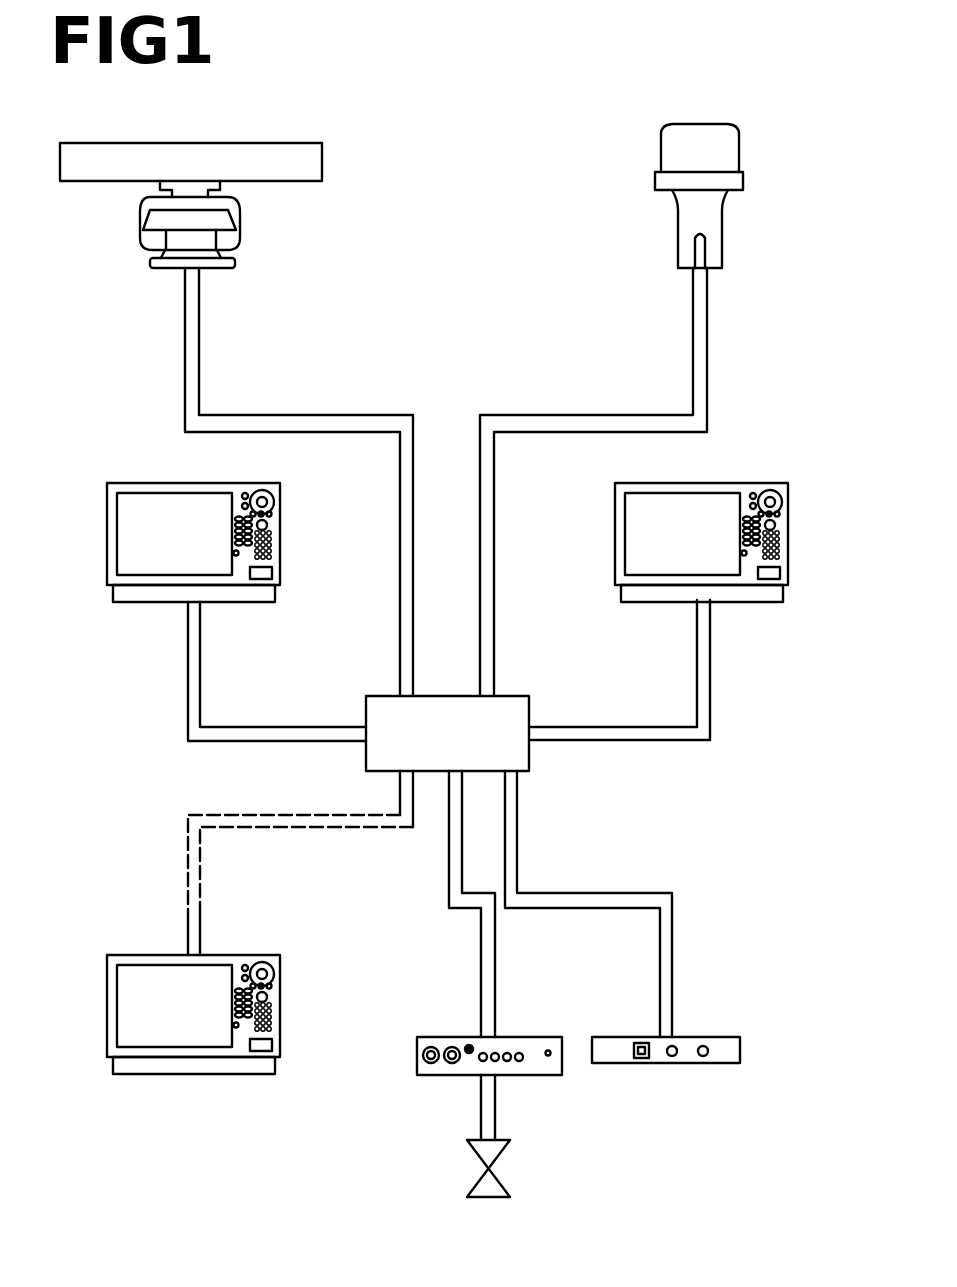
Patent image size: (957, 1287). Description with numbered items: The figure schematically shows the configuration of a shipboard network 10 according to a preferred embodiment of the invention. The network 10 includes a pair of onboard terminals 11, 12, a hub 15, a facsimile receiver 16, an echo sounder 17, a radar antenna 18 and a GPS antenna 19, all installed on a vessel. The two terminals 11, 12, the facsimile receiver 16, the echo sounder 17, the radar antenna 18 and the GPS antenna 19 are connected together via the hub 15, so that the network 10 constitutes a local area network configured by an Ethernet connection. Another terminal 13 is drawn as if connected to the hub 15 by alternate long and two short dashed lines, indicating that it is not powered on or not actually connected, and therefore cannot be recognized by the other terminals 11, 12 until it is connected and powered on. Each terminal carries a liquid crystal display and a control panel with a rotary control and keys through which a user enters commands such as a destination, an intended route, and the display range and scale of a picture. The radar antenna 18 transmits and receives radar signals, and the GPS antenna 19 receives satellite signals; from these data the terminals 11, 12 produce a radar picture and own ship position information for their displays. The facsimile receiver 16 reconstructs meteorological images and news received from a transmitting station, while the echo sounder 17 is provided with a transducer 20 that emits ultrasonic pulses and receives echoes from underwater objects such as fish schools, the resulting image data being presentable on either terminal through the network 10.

The network 10 is at (742, 818).
The onboard terminal 11 is at (232, 573).
The onboard terminal 12 is at (705, 592).
The terminal 13 is at (253, 922).
The hub 15 is at (518, 755).
The facsimile receiver 16 is at (626, 1035).
The echo sounder 17 is at (460, 1035).
The radar antenna 18 is at (237, 217).
The GPS antenna 19 is at (713, 208).
The transducer 20 is at (505, 1155).